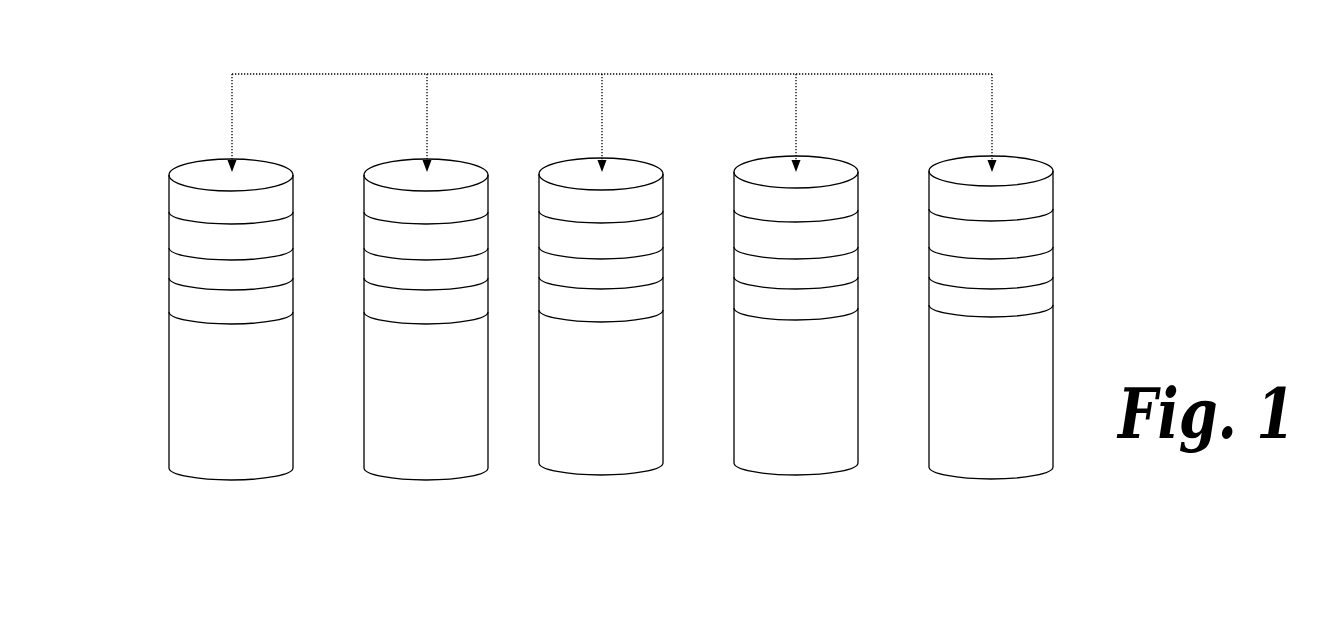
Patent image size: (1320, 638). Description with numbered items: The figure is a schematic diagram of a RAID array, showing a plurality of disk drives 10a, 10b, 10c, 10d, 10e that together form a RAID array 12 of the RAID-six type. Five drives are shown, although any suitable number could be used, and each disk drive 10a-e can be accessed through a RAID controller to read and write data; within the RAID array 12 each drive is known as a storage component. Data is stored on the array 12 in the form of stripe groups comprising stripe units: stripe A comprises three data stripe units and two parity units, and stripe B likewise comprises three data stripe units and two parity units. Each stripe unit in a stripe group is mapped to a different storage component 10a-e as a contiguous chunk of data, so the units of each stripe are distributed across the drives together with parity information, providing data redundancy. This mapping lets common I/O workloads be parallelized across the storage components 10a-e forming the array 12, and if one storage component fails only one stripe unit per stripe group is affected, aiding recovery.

The RAID 6 array 12 is at (1080, 124).
The disk drive 10a is at (235, 447).
The disk drive 10b is at (420, 447).
The disk drive 10c is at (582, 455).
The disk drive 10d is at (789, 448).
The disk drive 10e is at (963, 440).